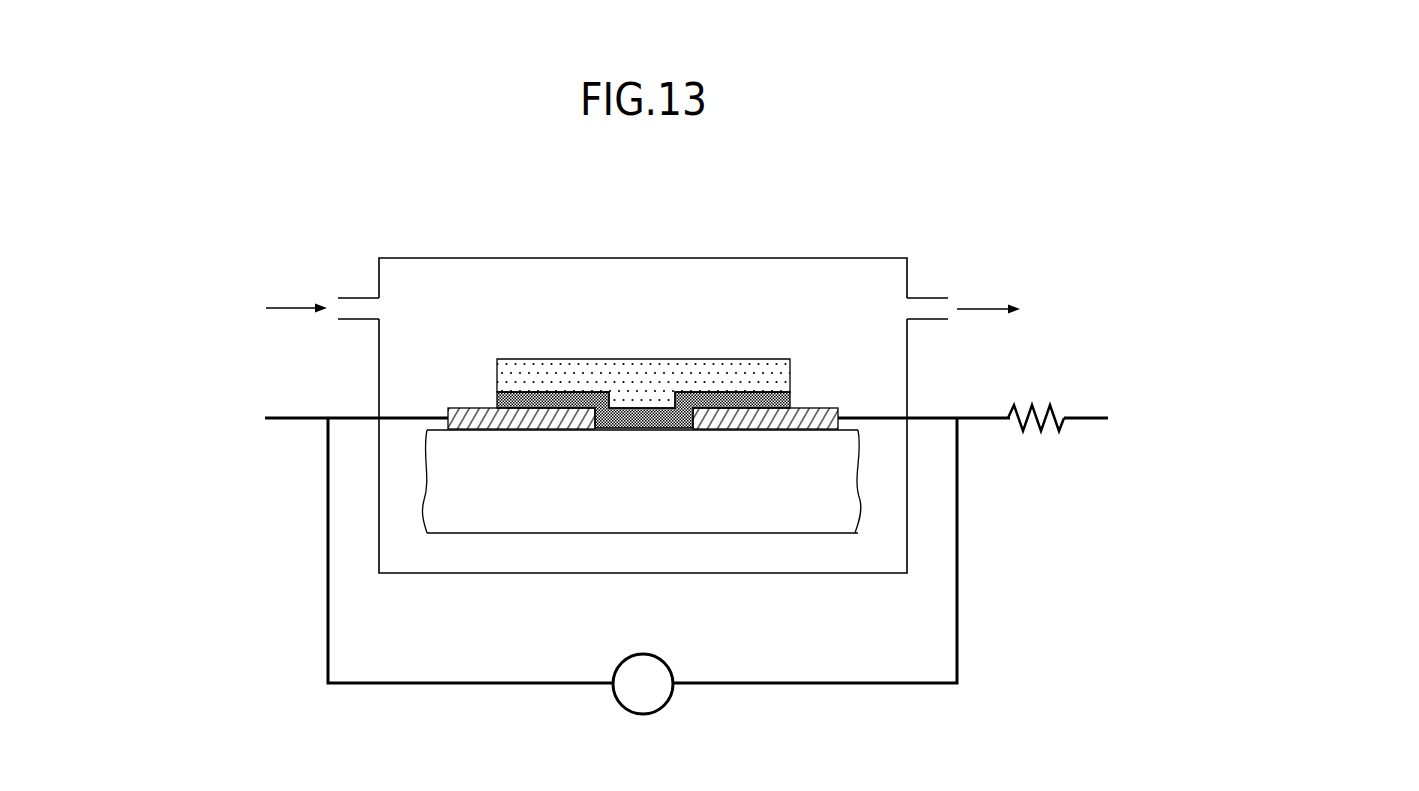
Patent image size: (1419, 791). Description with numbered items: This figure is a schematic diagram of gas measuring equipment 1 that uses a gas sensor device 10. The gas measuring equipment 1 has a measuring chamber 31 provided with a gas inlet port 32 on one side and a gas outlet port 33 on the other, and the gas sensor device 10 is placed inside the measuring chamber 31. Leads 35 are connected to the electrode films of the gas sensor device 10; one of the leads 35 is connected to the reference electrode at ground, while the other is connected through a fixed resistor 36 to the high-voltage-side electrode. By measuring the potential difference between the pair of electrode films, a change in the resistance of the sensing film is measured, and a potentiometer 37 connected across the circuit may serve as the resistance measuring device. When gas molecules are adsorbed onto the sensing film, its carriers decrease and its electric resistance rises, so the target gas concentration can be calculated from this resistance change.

The gas measuring equipment 1 is at (232, 200).
The gas sensor device 10 is at (751, 341).
The measuring chamber 31 is at (805, 258).
The gas inlet port 32 is at (356, 297).
The gas outlet port 33 is at (927, 299).
The leads 35 is at (295, 415).
The fixed resistor 36 is at (1023, 405).
The potentiometer 37 is at (657, 656).